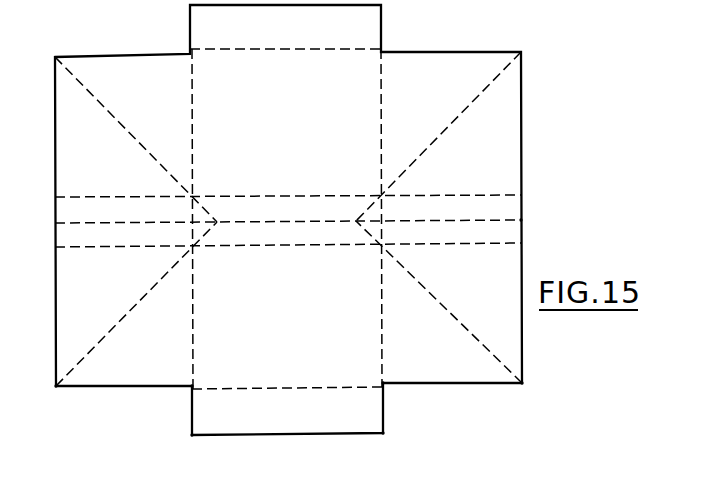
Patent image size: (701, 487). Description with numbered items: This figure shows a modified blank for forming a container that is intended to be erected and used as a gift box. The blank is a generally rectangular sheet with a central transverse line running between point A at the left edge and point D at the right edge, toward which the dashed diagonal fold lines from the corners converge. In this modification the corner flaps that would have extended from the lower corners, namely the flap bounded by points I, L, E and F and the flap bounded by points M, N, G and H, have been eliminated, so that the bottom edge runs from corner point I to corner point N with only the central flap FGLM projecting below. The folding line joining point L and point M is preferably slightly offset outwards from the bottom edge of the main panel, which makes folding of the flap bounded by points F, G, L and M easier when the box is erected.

The point A is at (276, 227).
The point D is at (532, 220).
The corner point I is at (47, 387).
The point L is at (179, 398).
The point M is at (394, 396).
The corner point N is at (534, 394).
The point F is at (182, 447).
The point G is at (395, 446).